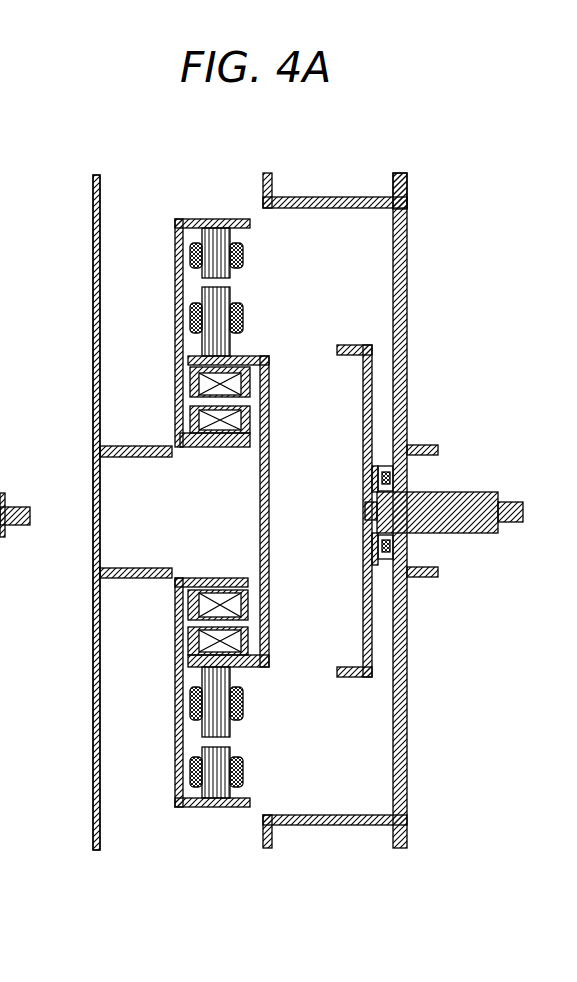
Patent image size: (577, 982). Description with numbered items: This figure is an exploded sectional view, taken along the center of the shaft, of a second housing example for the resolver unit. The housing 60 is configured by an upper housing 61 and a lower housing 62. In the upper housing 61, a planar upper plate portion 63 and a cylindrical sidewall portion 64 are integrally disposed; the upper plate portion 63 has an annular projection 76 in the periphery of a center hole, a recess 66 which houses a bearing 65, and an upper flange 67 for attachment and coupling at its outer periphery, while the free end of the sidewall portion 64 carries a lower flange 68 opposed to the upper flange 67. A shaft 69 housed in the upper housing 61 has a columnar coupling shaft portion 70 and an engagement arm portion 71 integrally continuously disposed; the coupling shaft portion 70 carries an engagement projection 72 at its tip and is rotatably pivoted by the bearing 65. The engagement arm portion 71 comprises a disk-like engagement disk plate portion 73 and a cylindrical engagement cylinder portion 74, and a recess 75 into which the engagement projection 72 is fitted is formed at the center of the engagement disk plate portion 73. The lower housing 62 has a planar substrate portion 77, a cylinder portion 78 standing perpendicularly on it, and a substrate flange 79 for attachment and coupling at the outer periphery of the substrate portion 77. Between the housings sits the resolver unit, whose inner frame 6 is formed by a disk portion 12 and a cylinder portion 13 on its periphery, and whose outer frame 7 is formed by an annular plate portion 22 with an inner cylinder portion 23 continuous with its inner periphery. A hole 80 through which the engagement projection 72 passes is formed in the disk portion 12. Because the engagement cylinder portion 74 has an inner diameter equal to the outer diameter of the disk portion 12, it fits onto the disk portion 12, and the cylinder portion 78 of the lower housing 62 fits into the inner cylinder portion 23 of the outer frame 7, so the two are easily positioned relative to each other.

The housing 60 is at (393, 104).
The upper housing 61 is at (370, 166).
The lower housing 62 is at (123, 171).
The upper plate portion 63 is at (407, 294).
The sidewall portion 64 is at (336, 196).
The bearing 65 is at (394, 481).
The recess 66 is at (393, 464).
The upper flange 67 is at (408, 192).
The lower flange 68 is at (263, 181).
The shaft 69 is at (489, 442).
The coupling shaft portion 70 is at (480, 534).
The engagement arm portion 71 is at (378, 628).
The engagement projection 72 is at (510, 502).
The engagement disk plate portion 73 is at (373, 560).
The engagement cylinder portion 74 is at (352, 678).
The recess 75 is at (365, 506).
The annular projection 76 is at (431, 445).
The substrate portion 77 is at (93, 262).
The cylinder portion 78 is at (120, 448).
The substrate flange 79 is at (93, 192).
The outer frame 7 is at (160, 268).
The inner frame 6 is at (263, 347).
The annular plate portion 22 is at (180, 338).
The disk portion 12 is at (270, 400).
The inner cylinder portion 23 is at (210, 447).
The cylinder portion 13 is at (250, 668).
The hole 80 is at (270, 515).